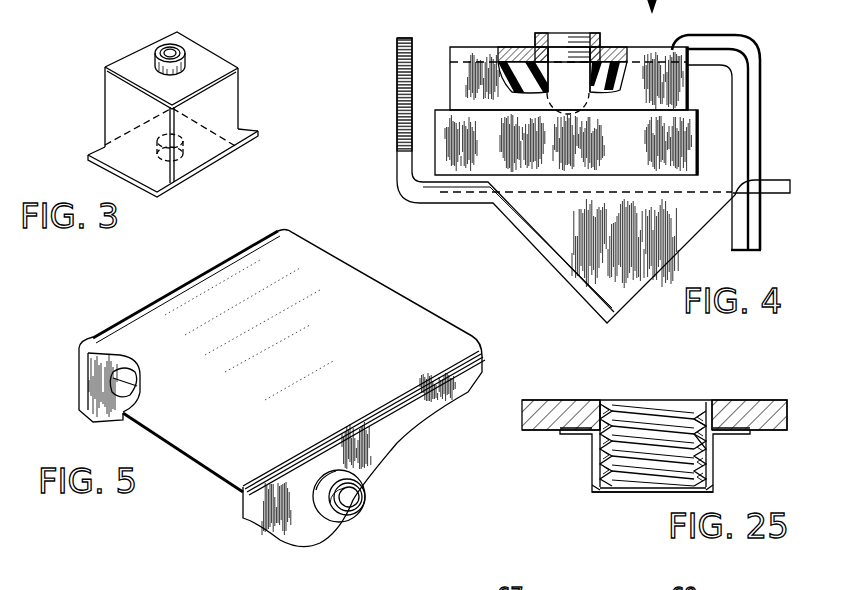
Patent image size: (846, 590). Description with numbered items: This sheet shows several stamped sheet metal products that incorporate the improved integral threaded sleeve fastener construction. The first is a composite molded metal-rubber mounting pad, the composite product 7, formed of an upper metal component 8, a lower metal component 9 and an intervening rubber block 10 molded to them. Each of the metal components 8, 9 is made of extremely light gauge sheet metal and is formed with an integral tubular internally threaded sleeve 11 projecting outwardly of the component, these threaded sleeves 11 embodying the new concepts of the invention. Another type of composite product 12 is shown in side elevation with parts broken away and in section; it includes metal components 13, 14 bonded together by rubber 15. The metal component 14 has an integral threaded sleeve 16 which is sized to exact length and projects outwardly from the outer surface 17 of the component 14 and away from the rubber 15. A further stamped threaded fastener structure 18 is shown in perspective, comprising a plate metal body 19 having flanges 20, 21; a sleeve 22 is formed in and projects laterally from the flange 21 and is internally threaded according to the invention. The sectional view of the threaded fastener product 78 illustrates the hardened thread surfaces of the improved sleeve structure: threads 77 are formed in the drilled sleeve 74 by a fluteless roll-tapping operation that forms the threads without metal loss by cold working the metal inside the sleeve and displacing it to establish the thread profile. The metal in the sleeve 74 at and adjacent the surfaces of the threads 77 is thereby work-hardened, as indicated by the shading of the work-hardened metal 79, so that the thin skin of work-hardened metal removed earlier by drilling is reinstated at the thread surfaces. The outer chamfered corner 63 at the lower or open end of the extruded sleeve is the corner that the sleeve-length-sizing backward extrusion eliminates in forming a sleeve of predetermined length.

In FIG. 3, the composite product 7 is at (98, 104).
In FIG. 3, the upper metal component 8 is at (135, 62).
In FIG. 3, the lower metal component 9 is at (243, 131).
In FIG. 3, the rubber block 10 is at (225, 107).
In FIG. 3, the integral tubular internally threaded sleeve 11 is at (186, 63).
In FIG. 4, the composite product 12 is at (392, 165).
In FIG. 4, the metal component 13 is at (508, 208).
In FIG. 4, the metal component 14 is at (702, 43).
In FIG. 4, the rubber 15 is at (668, 98).
In FIG. 4, the integral threaded sleeve 16 is at (603, 40).
In FIG. 4, the outer surface 17 is at (478, 47).
In FIG. 5, the stamped threaded fastener structure 18 is at (136, 291).
In FIG. 5, the plate metal body 19 is at (340, 303).
In FIG. 5, the flange 20 is at (85, 385).
In FIG. 5, the flange 21 is at (283, 515).
In FIG. 5, the sleeve 22 is at (318, 504).
In FIG. 25, the outer chamfered corner 63 is at (712, 490).
In FIG. 25, the drilled sleeve 74 is at (598, 450).
In FIG. 25, the threads 77 is at (650, 466).
In FIG. 25, the threaded fastener product 78 is at (760, 418).
In FIG. 25, the work-hardened metal 79 is at (690, 414).